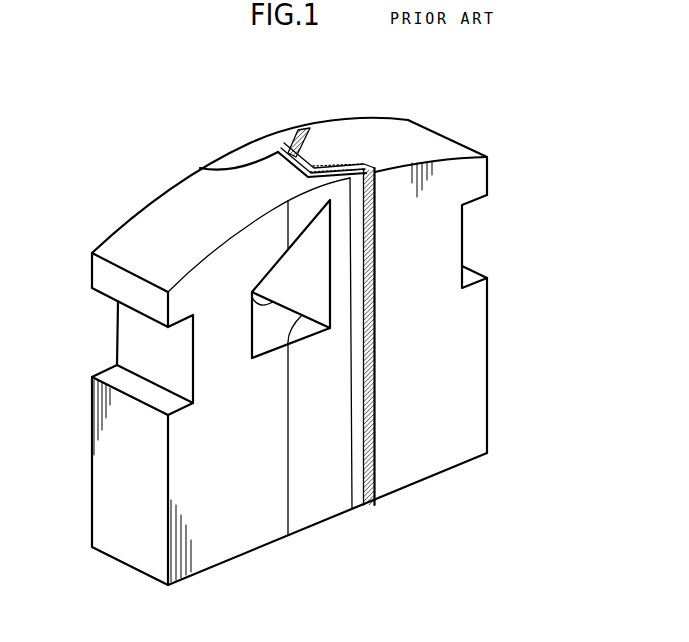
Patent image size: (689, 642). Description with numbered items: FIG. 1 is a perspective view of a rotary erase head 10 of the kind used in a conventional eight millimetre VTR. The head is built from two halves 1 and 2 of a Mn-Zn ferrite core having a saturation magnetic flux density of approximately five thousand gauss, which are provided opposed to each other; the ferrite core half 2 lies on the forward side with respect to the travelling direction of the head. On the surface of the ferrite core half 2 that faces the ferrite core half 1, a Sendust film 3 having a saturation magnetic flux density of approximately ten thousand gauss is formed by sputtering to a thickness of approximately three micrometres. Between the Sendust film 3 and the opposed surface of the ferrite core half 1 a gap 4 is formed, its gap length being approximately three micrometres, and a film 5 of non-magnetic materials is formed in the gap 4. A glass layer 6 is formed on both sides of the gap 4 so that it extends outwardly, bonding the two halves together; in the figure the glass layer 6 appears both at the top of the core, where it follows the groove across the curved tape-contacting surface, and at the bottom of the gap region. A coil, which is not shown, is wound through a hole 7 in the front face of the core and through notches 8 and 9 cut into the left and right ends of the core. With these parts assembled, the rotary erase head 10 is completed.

The ferrite core half 1 is at (188, 178).
The ferrite core half 2 is at (398, 125).
The Sendust film 3 is at (305, 158).
The gap 4 is at (270, 152).
The film of non-magnetic materials 5 is at (282, 150).
The glass layer 6 is at (238, 155).
The hole 7 is at (313, 307).
The notch 8 is at (126, 337).
The notch 9 is at (478, 238).
The rotary erase head 10 is at (106, 198).